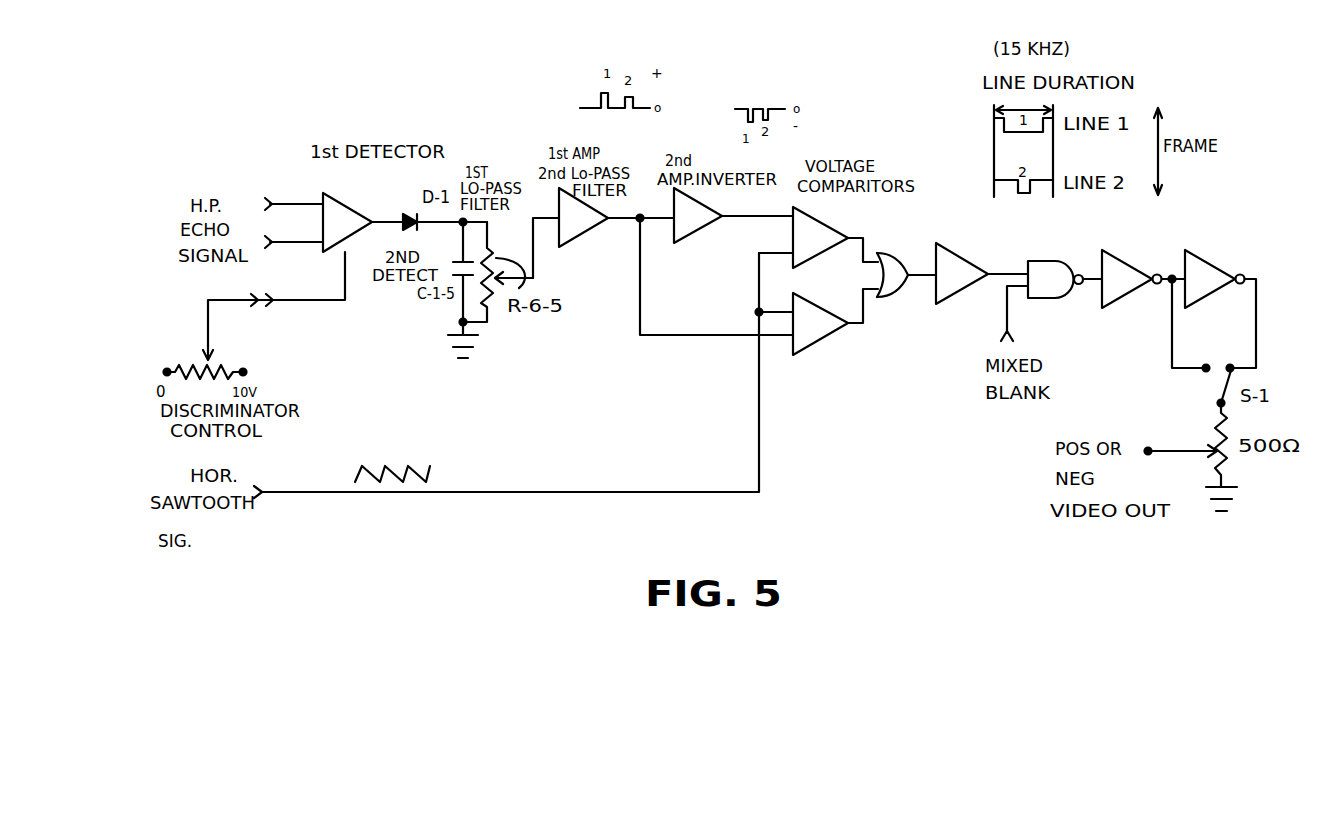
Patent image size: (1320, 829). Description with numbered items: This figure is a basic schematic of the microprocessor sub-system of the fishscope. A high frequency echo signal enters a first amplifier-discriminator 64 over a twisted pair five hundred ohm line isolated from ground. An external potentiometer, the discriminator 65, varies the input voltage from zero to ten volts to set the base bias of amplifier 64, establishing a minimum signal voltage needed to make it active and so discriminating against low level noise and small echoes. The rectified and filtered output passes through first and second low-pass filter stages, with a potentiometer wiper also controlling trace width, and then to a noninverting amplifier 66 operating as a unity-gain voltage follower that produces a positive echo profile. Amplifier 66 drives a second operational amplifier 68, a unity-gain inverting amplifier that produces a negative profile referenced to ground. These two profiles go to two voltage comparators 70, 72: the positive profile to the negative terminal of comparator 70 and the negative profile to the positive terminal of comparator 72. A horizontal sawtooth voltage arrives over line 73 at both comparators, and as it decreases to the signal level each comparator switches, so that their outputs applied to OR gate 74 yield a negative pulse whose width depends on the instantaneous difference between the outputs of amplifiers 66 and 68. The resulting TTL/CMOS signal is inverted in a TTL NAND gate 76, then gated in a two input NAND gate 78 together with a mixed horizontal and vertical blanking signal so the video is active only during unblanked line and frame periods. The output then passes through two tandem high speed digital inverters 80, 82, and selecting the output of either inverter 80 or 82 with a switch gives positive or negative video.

The first amplifier-discriminator 64 is at (341, 196).
The discriminator 65 is at (210, 318).
The noninverting amplifier 66 is at (570, 246).
The second operational amplifier 68 is at (700, 242).
The voltage comparator 70 is at (822, 340).
The voltage comparator 72 is at (820, 211).
The line 73 is at (573, 490).
The OR gate 74 is at (896, 292).
The TTL NAND gate 76 is at (956, 305).
The two input NAND gate 78 is at (1067, 226).
The high speed digital inverter 80 is at (1121, 252).
The high speed digital inverter 82 is at (1216, 255).